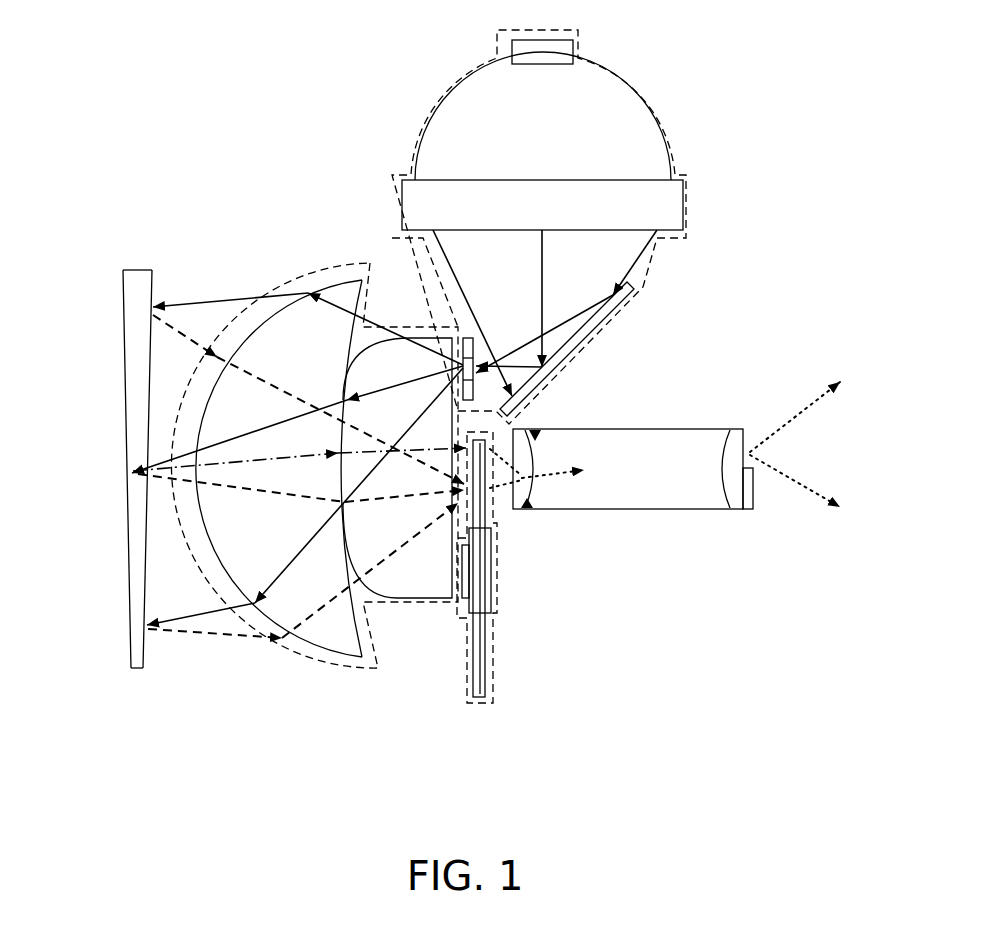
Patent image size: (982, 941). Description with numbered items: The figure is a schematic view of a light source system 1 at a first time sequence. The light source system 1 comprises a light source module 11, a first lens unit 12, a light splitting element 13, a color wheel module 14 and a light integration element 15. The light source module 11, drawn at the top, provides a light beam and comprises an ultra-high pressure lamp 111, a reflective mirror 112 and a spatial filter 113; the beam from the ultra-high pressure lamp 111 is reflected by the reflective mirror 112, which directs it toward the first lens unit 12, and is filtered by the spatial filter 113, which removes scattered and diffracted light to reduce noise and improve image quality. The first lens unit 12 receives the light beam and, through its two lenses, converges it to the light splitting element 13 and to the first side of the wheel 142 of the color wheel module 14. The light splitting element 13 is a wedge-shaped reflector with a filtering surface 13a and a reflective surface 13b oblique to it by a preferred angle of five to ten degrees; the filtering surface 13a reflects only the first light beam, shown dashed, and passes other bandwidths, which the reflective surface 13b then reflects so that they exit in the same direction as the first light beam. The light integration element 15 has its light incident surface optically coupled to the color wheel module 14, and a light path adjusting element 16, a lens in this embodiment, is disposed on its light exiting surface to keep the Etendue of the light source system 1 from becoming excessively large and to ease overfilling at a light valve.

The light source system 1 is at (270, 50).
The light source module 11 is at (564, 227).
The ultra-high pressure lamp 111 is at (690, 205).
The reflective mirror 112 is at (610, 316).
The spatial filter 113 is at (461, 338).
The first lens unit 12 is at (322, 660).
The light splitting element 13 is at (139, 434).
The filtering surface 13a is at (153, 285).
The reflective surface 13b is at (122, 285).
The color wheel module 14 is at (502, 593).
The wheel 142 is at (484, 690).
The light integration element 15 is at (672, 429).
The light path adjusting element 16 is at (749, 510).